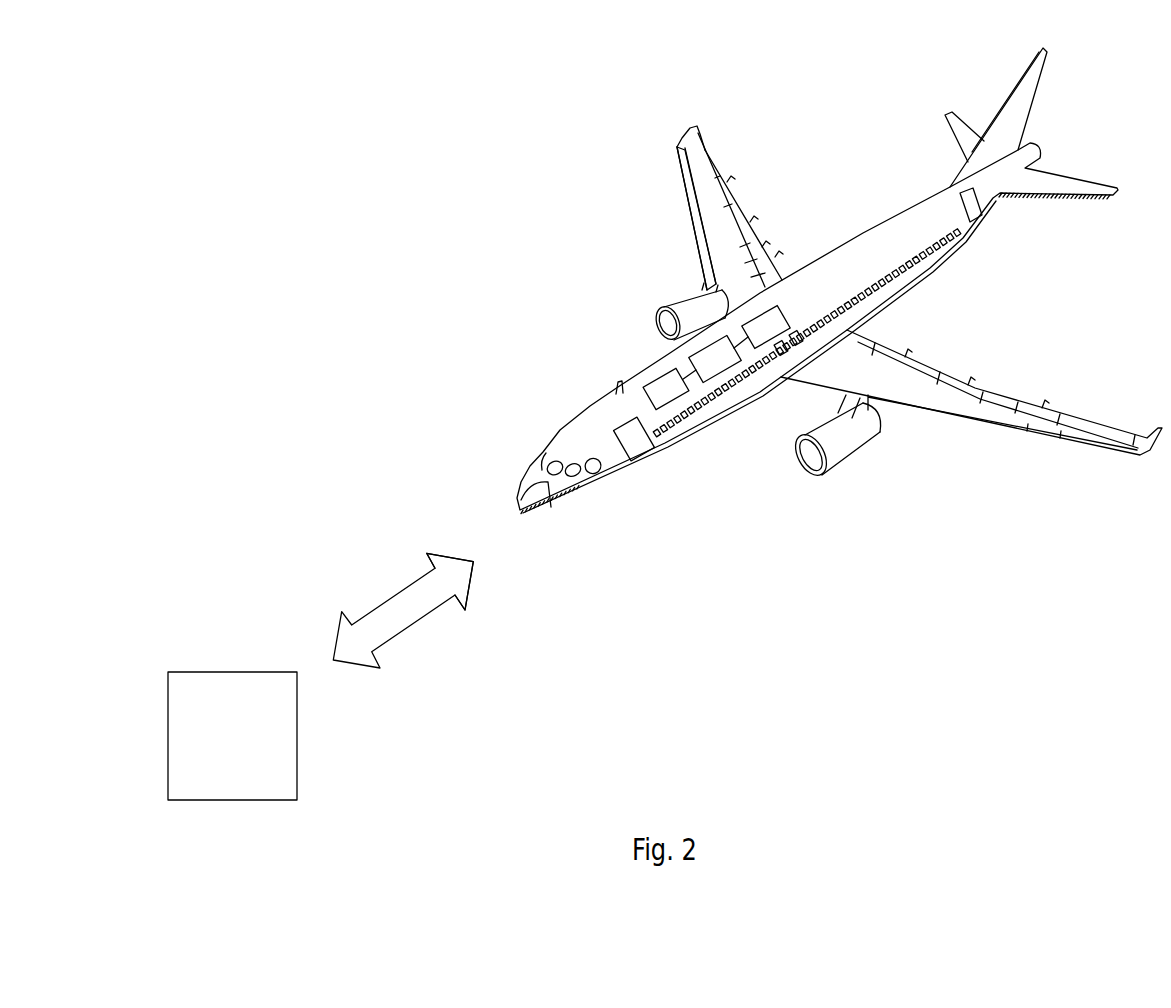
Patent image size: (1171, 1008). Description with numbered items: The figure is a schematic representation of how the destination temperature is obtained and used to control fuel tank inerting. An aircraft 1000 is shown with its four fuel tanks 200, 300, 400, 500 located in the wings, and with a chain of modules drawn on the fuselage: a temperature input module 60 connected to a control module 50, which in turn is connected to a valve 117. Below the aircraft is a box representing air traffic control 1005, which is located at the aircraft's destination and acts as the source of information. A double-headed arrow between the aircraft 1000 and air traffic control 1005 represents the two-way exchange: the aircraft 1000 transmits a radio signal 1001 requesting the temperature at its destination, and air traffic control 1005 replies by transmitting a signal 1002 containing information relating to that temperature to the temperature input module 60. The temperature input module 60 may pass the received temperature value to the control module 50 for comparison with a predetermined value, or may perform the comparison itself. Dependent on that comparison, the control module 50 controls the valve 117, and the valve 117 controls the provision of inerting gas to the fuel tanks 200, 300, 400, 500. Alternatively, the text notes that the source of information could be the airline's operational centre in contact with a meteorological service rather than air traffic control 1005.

The aircraft 1000 is at (839, 311).
The fuel tank 500 is at (702, 203).
The fuel tank 400 is at (728, 268).
The fuel tank 300 is at (971, 435).
The fuel tank 200 is at (1028, 420).
The temperature input module 60 is at (664, 392).
The control module 50 is at (715, 363).
The valve 117 is at (768, 337).
The signal 1001 is at (345, 630).
The signal 1002 is at (457, 573).
The air traffic control 1005 is at (297, 752).